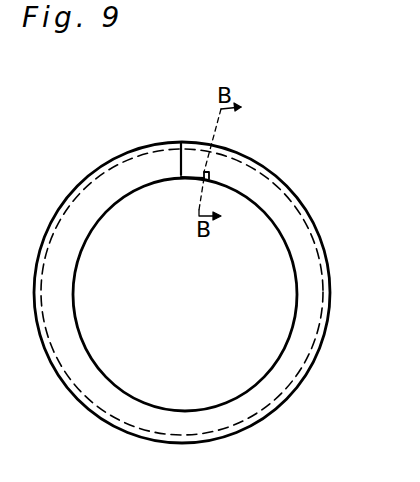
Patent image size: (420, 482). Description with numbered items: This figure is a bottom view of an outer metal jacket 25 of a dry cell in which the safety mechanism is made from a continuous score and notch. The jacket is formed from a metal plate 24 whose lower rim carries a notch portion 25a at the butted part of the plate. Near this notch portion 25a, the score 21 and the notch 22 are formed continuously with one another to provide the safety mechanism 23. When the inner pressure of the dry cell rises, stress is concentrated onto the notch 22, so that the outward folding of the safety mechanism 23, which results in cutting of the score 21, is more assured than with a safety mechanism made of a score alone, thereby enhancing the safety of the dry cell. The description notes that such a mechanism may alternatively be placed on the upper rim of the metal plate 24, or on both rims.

The score 21 is at (244, 166).
The notch 22 is at (207, 180).
The safety mechanism 23 is at (185, 183).
The metal plate 24 is at (323, 239).
The ring assembly 25 is at (283, 79).
The notch portion 25a is at (183, 158).